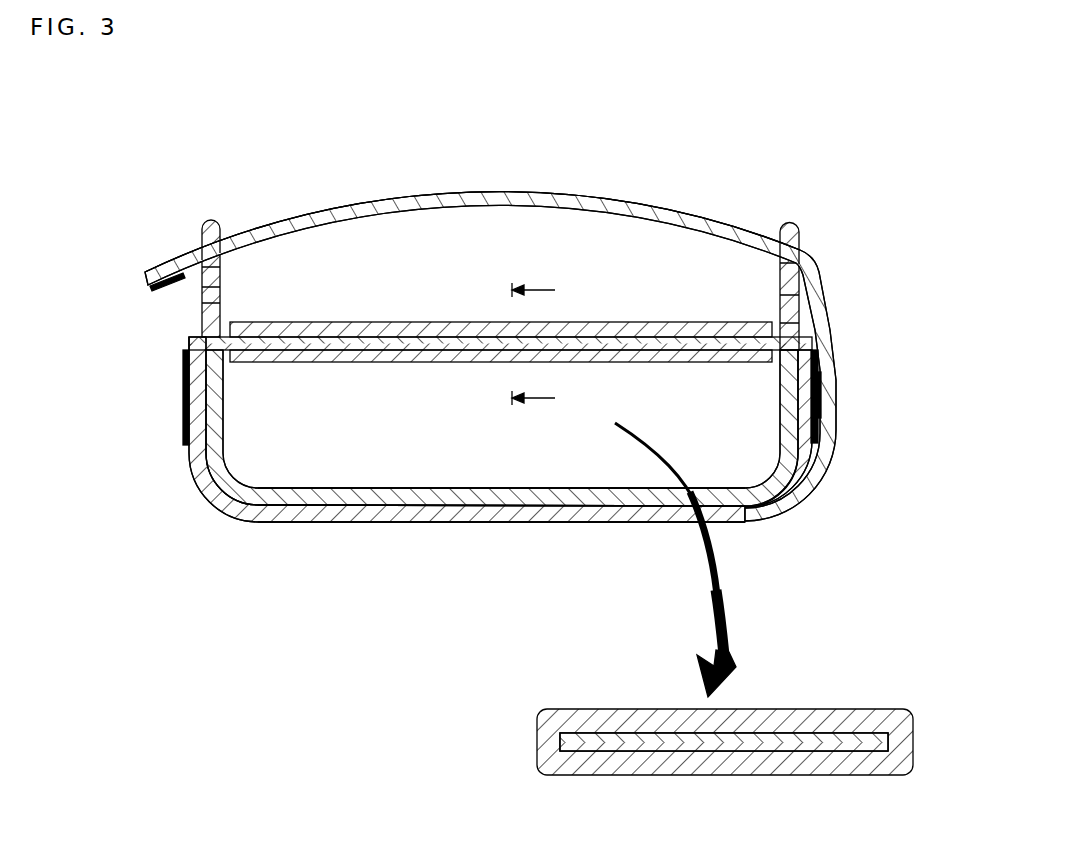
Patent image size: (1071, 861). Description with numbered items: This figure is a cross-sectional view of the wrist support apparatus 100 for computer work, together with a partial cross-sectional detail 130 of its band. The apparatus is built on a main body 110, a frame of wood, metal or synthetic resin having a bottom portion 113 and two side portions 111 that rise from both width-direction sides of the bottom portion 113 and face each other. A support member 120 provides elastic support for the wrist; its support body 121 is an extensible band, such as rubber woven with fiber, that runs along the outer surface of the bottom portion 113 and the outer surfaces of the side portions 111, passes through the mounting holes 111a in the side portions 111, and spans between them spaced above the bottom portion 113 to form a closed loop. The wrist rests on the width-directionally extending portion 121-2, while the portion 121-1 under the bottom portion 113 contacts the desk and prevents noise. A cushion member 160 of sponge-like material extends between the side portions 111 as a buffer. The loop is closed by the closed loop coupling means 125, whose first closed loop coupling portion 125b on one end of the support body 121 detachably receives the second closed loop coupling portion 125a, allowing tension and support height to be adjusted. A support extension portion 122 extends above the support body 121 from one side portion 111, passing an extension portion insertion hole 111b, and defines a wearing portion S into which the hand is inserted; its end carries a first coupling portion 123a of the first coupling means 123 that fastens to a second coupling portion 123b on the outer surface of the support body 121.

The wrist support apparatus 100 is at (270, 109).
The main body 110 is at (497, 320).
The side portion 111 is at (500, 252).
The mounting hole 111a is at (218, 300).
The extension portion insertion hole 111b is at (200, 249).
The bottom portion 113 is at (518, 508).
The support member 120 is at (404, 560).
The support body 121 is at (285, 530).
The portion of support body contacting desk 121-1 is at (613, 517).
The width-directionally extending portion 121-2 is at (368, 362).
The support extension portion 122 is at (498, 193).
The first coupling means 123 is at (122, 364).
The first coupling portion 123a is at (163, 288).
The second coupling portion 123b is at (183, 417).
The closed loop coupling means 125 is at (879, 374).
The second closed loop coupling portion 125a is at (820, 400).
The first closed loop coupling portion 125b is at (822, 370).
The wall plate cross-section detail 130 is at (797, 720).
The cushion member 160 is at (636, 322).
The wearing portion S is at (432, 258).